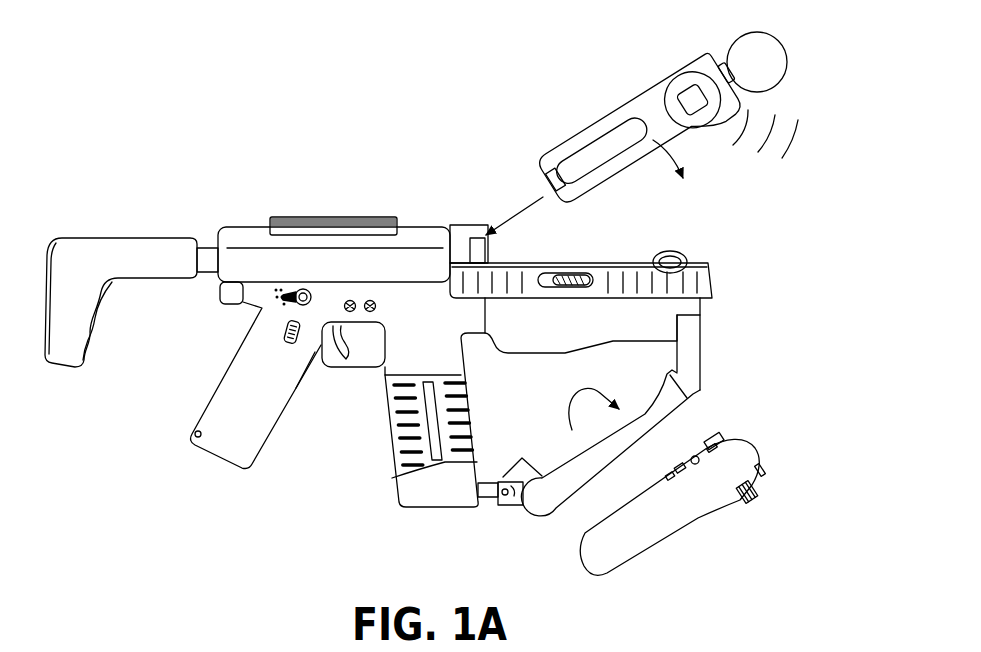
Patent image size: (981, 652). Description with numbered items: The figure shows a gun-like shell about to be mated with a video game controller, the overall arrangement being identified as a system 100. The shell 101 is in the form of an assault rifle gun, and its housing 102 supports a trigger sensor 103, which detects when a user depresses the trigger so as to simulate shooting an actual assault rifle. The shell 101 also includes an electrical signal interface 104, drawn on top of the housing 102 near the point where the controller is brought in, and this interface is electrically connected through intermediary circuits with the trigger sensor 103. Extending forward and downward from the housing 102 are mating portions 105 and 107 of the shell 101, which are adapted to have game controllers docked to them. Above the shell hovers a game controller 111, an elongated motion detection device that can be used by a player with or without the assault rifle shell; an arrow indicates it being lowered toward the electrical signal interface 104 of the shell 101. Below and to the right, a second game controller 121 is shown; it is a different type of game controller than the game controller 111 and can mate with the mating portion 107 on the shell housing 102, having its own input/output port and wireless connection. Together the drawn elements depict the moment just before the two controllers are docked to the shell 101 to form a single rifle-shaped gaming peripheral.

The firearm-shaped game controller peripheral 100 is at (171, 88).
The shell 101 is at (237, 227).
The housing 102 is at (260, 227).
The trigger sensor 103 is at (364, 345).
The electrical signal interface 104 is at (478, 237).
The mating portion 105 is at (713, 278).
The mating portion 107 is at (561, 486).
The game controller 111 is at (638, 127).
The second game controller 121 is at (760, 447).